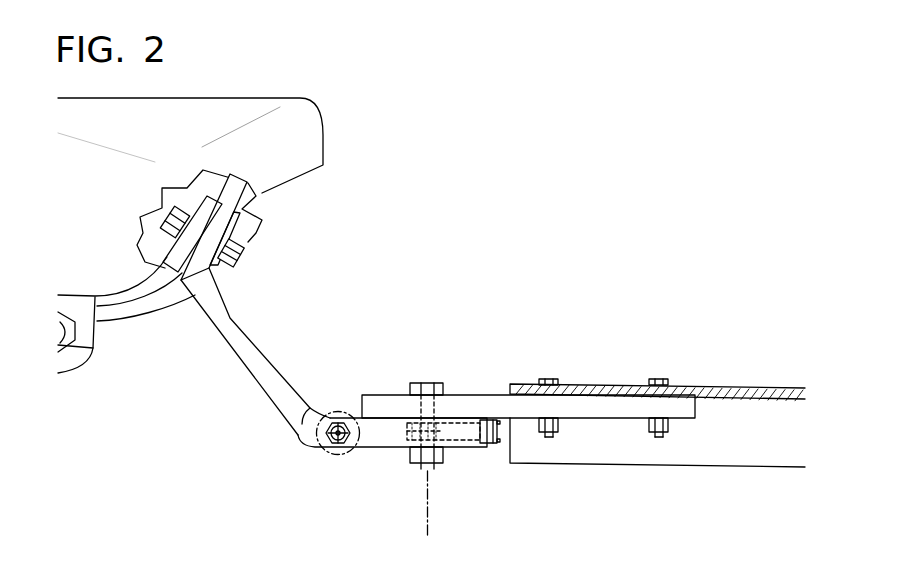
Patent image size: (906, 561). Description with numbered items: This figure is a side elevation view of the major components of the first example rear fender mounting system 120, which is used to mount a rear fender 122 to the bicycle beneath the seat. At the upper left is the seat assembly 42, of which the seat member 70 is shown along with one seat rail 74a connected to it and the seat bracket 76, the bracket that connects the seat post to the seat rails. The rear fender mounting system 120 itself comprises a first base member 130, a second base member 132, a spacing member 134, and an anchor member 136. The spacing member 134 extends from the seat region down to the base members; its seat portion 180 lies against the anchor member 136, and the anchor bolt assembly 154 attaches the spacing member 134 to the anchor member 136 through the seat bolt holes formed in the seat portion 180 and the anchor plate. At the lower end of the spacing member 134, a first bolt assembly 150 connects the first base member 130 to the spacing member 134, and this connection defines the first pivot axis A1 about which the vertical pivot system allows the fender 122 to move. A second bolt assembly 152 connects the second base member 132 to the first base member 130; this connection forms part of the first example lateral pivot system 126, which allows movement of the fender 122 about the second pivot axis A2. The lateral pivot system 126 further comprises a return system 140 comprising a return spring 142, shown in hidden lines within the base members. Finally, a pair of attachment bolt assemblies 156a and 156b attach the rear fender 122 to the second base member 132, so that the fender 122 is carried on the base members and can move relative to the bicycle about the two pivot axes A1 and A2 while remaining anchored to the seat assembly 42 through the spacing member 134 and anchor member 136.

The seat assembly 42 is at (305, 94).
The seat member 70 is at (214, 112).
The seat rail 74a is at (128, 311).
The seat bracket 76 is at (93, 348).
The rear fender mounting system 120 is at (463, 282).
The rear fender 122 is at (747, 387).
The lateral pivot system 126 is at (428, 372).
The first base member 130 is at (382, 437).
The second base member 132 is at (488, 403).
The spacing member 134 is at (250, 360).
The anchor member 136 is at (168, 246).
The return system 140 is at (448, 479).
The return spring 142 is at (460, 445).
The first bolt assembly 150 is at (339, 458).
The second bolt assembly 152 is at (405, 377).
The anchor bolt assembly 154 is at (248, 257).
The attachment bolt assembly 156a is at (552, 371).
The attachment bolt assembly 156b is at (661, 371).
The seat portion 180 is at (232, 231).
The first pivot axis A1 is at (336, 441).
The second pivot axis A2 is at (424, 515).